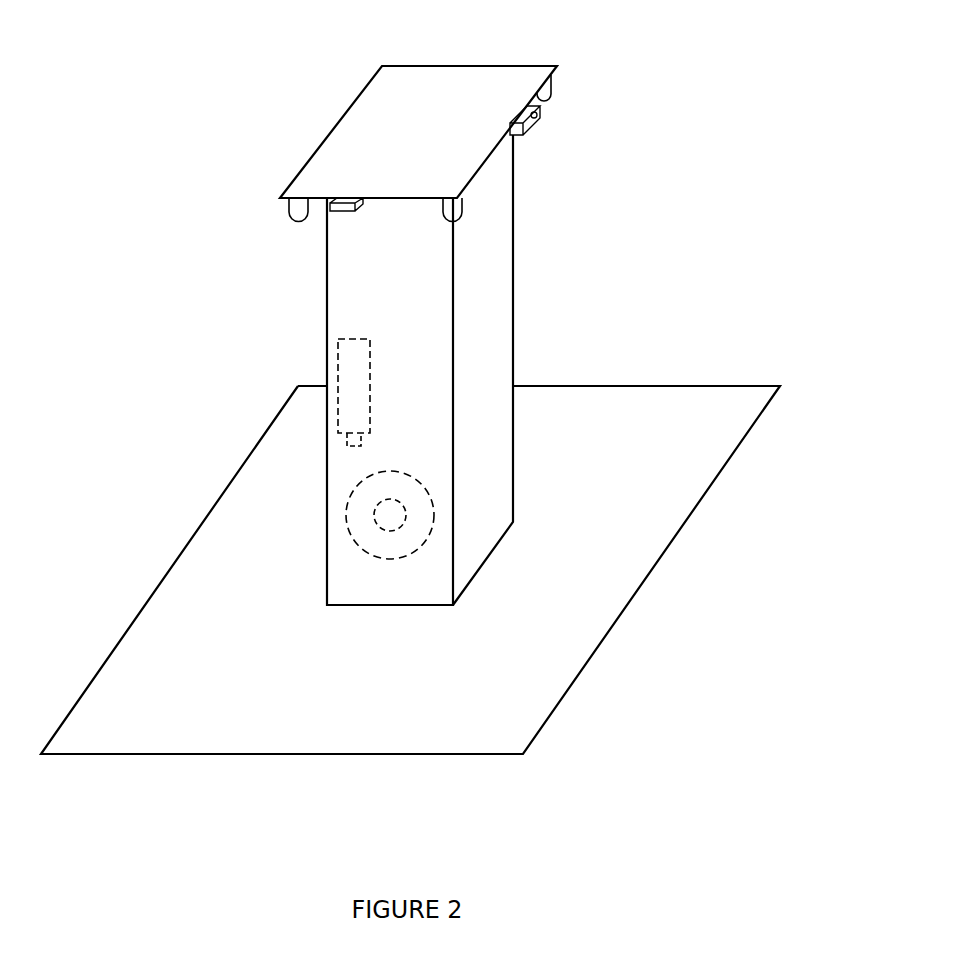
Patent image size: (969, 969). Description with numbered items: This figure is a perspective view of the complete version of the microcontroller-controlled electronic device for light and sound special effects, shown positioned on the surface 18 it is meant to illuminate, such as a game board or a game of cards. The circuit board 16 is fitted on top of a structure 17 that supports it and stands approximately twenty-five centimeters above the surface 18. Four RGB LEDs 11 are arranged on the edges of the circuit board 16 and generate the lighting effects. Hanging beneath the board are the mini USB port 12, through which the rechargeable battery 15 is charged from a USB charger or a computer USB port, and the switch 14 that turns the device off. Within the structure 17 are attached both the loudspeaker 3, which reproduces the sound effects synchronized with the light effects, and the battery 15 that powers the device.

The loudspeaker 3 is at (360, 519).
The RGB LEDs 11 is at (297, 210).
The mini USB port 12 is at (342, 208).
The switch 14 is at (532, 128).
The rechargeable battery 15 is at (360, 365).
The circuit board 16 is at (358, 120).
The structure 17 is at (493, 255).
The surface 18 is at (600, 583).